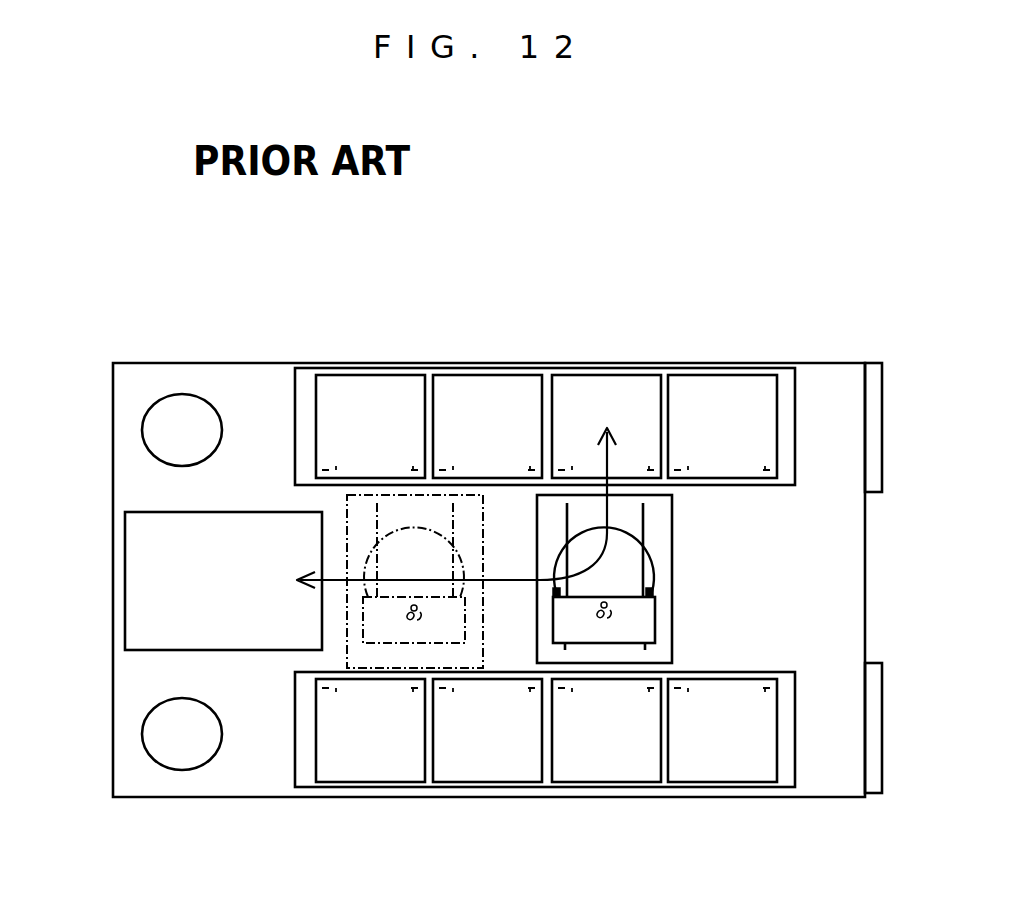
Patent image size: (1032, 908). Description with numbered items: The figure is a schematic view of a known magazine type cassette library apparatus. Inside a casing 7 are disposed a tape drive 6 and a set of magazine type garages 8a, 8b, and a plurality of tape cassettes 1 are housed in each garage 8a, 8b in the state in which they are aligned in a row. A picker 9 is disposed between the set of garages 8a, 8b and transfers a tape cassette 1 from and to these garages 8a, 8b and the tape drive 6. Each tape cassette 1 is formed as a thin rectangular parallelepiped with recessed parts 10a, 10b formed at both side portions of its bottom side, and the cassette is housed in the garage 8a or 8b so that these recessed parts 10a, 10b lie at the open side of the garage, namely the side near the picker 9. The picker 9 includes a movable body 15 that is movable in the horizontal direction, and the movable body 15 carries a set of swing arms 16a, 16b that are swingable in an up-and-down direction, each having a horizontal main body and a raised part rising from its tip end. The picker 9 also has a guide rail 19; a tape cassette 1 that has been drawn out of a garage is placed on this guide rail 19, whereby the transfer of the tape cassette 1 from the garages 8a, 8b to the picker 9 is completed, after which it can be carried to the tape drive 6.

The tape cassette 1 is at (462, 394).
The tape drive 6 is at (157, 590).
The casing 7 is at (825, 362).
The magazine type garage 8a is at (795, 463).
The magazine type garage 8b is at (795, 695).
The picker 9 is at (672, 628).
The recessed part 10a is at (560, 470).
The recessed part 10b is at (652, 462).
The movable body 15 is at (637, 620).
The swing arm 16a is at (553, 592).
The swing arm 16b is at (655, 594).
The guide rail 19 is at (567, 506).